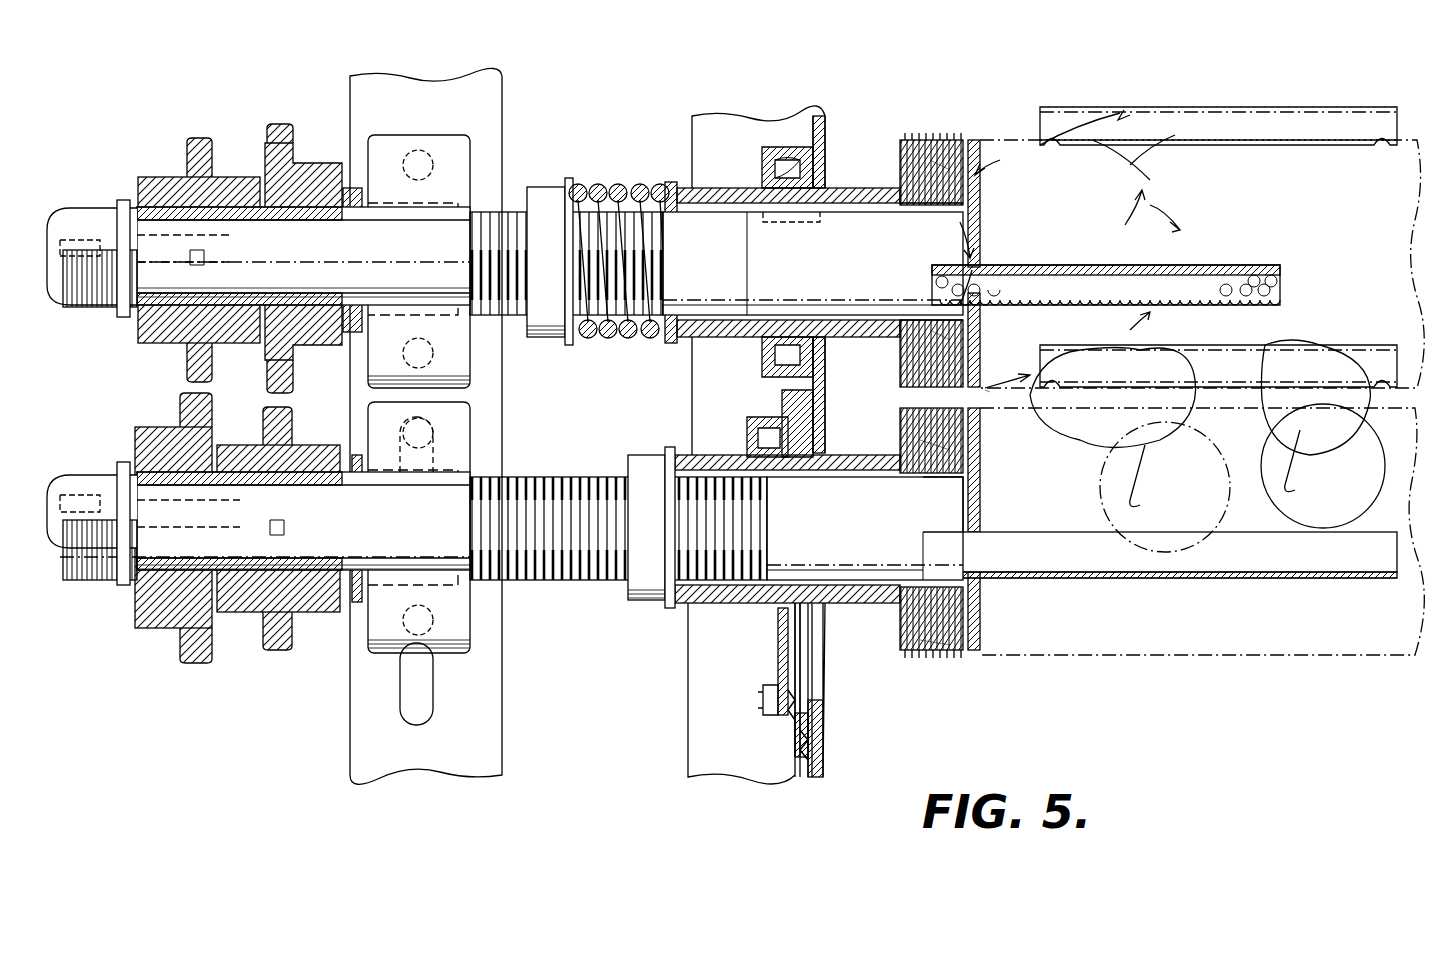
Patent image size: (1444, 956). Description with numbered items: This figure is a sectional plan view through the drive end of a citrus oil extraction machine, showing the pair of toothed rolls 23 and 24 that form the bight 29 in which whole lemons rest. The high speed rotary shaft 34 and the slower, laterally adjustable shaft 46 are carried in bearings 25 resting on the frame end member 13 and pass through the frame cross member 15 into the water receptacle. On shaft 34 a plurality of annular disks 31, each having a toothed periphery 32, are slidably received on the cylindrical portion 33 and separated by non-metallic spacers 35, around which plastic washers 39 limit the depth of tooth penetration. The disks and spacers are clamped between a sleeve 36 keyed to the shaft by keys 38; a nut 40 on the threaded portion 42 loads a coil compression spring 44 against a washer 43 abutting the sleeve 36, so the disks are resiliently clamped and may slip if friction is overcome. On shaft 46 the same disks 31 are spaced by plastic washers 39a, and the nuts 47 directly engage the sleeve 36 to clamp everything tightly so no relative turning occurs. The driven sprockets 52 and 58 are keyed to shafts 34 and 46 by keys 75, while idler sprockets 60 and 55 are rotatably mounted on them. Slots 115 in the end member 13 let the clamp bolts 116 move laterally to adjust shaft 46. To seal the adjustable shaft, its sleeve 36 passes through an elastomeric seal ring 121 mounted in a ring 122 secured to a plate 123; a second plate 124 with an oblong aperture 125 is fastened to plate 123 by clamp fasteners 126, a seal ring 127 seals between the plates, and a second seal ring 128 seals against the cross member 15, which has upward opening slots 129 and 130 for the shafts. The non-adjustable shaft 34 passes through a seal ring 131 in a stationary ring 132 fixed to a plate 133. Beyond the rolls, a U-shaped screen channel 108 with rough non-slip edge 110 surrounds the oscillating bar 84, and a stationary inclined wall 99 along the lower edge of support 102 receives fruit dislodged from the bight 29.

The end member 13 is at (408, 90).
The cross member 15 is at (733, 760).
The roll 23 is at (900, 150).
The roll 24 is at (925, 660).
The bearings 25 is at (455, 165).
The bight 29 is at (935, 392).
The annular disks 31 is at (973, 138).
The toothed periphery 32 is at (940, 138).
The cylindrical portion 33 is at (880, 283).
The rotary shaft 34 is at (62, 223).
The spacers 35 is at (920, 205).
The sleeve 36 is at (705, 330).
The keys 38 is at (818, 208).
The plastic washers 39 is at (925, 200).
The plastic annular washers 39a is at (950, 455).
The nut 40 is at (541, 200).
The threaded portions 42 is at (585, 220).
The washer 43 is at (670, 182).
The coil compression spring 44 is at (622, 210).
The shaft 46 is at (62, 495).
The nuts 47 is at (650, 590).
The sprocket 52 is at (283, 135).
The idler sprocket 55 is at (280, 650).
The sprocket 58 is at (202, 663).
The idler sprocket 60 is at (200, 150).
The keys 75 is at (318, 213).
The conveyor rack 84 is at (1095, 268).
The stationary inclined wall 99 is at (1048, 545).
The stationary support 102 is at (1190, 578).
The U-shaped channel 108 is at (1275, 118).
The non-slip edge 110 is at (1082, 312).
The slots 115 is at (425, 450).
The clamp bolts 116 is at (432, 430).
The elastomeric seal ring 121 is at (756, 440).
The ring 122 is at (780, 400).
The plate 123 is at (776, 665).
The second plate 124 is at (800, 757).
The oblong aperture 125 is at (805, 665).
The clamp fasteners 126 is at (760, 700).
The seal ring 127 is at (790, 700).
The second seal ring 128 is at (805, 738).
The upward opening slots 129 is at (822, 340).
The upward opening slots 130 is at (812, 700).
The seal rings 131 is at (770, 168).
The stationary rings 132 is at (785, 150).
The plates 133 is at (822, 140).